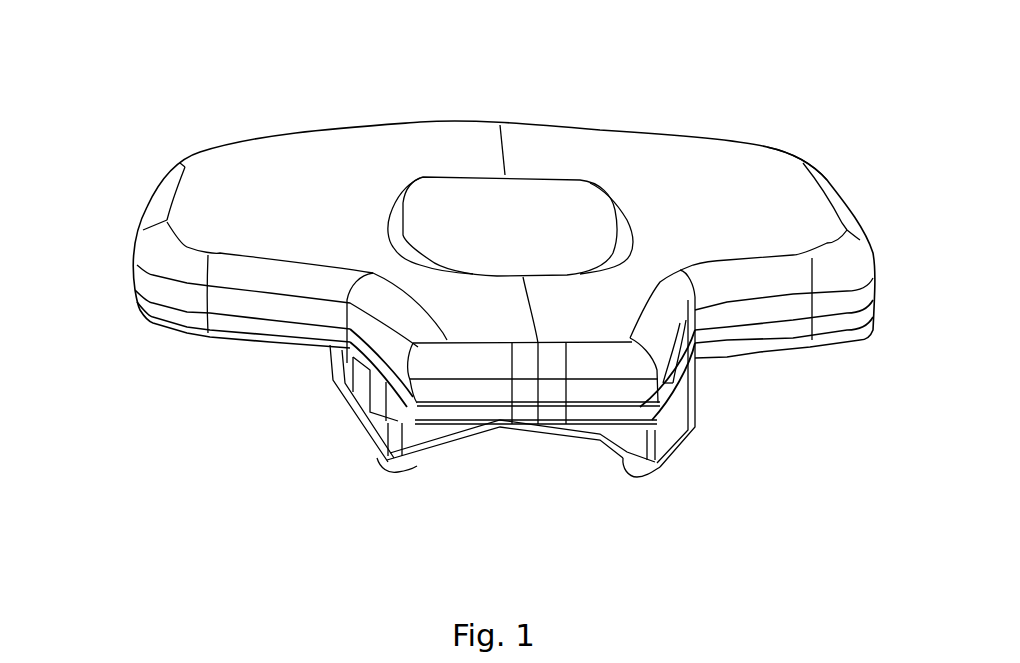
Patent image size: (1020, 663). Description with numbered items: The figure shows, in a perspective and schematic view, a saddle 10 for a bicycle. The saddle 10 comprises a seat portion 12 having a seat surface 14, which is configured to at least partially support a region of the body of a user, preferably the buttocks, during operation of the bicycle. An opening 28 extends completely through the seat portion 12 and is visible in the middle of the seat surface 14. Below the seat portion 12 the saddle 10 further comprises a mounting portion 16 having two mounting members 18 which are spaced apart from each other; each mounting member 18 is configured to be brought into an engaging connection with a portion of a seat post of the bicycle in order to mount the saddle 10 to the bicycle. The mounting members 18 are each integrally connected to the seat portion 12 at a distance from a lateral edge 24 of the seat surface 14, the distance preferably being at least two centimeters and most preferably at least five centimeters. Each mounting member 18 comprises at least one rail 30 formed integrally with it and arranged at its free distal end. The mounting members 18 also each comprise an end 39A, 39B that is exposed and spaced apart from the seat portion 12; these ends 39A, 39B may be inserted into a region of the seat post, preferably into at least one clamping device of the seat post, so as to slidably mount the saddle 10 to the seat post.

The saddle 10 is at (125, 76).
The seat portion 12 is at (116, 257).
The seat surface 14 is at (592, 148).
The mounting portion 16 is at (228, 433).
The mounting members 18 is at (355, 490).
The lateral edge 24 is at (795, 185).
The opening 28 is at (542, 246).
The rail 30 is at (434, 490).
The end 39A is at (642, 468).
The end 39B is at (402, 465).